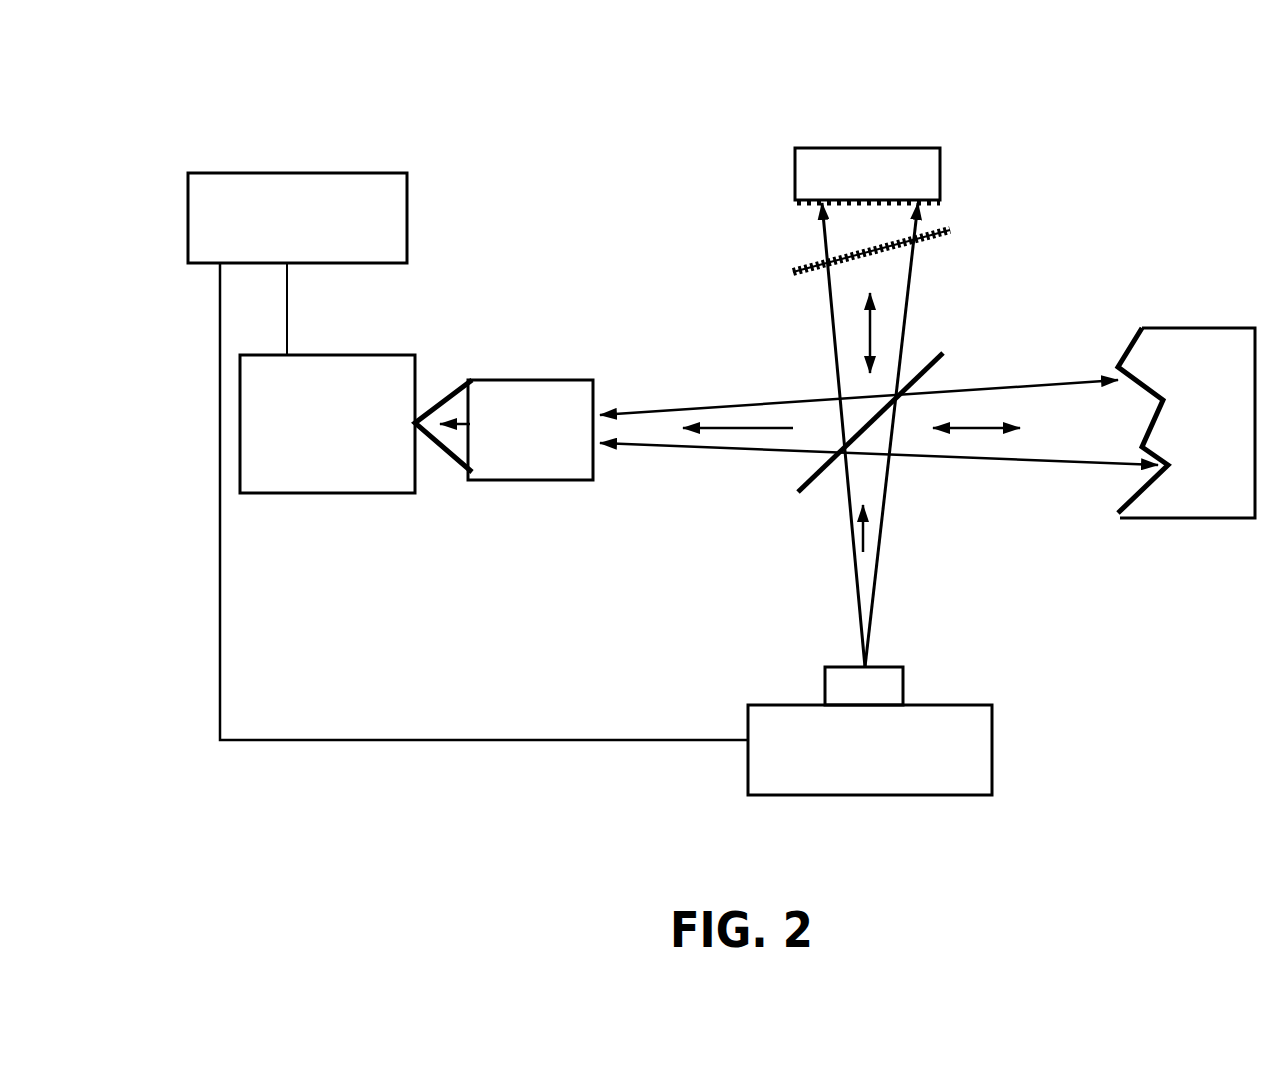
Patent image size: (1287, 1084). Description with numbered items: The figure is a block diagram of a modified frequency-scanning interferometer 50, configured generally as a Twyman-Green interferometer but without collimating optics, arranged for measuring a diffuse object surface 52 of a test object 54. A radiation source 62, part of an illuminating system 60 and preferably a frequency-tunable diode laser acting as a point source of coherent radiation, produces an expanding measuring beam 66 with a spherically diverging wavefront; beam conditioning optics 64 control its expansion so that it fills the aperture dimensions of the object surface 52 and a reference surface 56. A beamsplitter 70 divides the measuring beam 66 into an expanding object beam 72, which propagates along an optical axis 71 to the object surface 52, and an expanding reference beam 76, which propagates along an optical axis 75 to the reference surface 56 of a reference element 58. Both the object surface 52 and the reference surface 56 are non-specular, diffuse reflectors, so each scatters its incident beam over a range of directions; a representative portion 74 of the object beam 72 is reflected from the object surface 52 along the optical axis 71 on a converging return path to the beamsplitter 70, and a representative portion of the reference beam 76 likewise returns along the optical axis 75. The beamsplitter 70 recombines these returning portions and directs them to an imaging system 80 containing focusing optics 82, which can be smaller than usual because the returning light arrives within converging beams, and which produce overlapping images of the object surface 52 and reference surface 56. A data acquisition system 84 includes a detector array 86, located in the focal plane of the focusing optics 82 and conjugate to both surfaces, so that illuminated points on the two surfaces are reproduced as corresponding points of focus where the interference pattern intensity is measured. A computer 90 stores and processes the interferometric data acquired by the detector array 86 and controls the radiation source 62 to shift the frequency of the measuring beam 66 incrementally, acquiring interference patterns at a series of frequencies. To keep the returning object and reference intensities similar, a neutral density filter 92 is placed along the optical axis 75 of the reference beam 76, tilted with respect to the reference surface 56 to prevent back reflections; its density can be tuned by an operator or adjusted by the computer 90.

The frequency-scanning interferometer 50 is at (444, 145).
The object surface 52 is at (1128, 345).
The test object 54 is at (1187, 423).
The reference surface 56 is at (808, 205).
The reference element 58 is at (867, 174).
The illuminating system 60 is at (995, 740).
The radiation source 62 is at (870, 750).
The beam conditioning optics 64 is at (825, 683).
The measuring beam 66 is at (845, 545).
The beamsplitter 70 is at (808, 476).
The optical axis 71 is at (977, 428).
The object beam 72 is at (1047, 470).
The representative portion of the object beam 74 is at (670, 410).
The optical axis 75 is at (860, 328).
The reference beam 76 is at (920, 270).
The imaging system 80 is at (578, 372).
The focusing optics 82 is at (530, 430).
The data acquisition system 84 is at (237, 437).
The detector array 86 is at (327, 424).
The computer 90 is at (297, 264).
The neutral density filter 92 is at (950, 230).